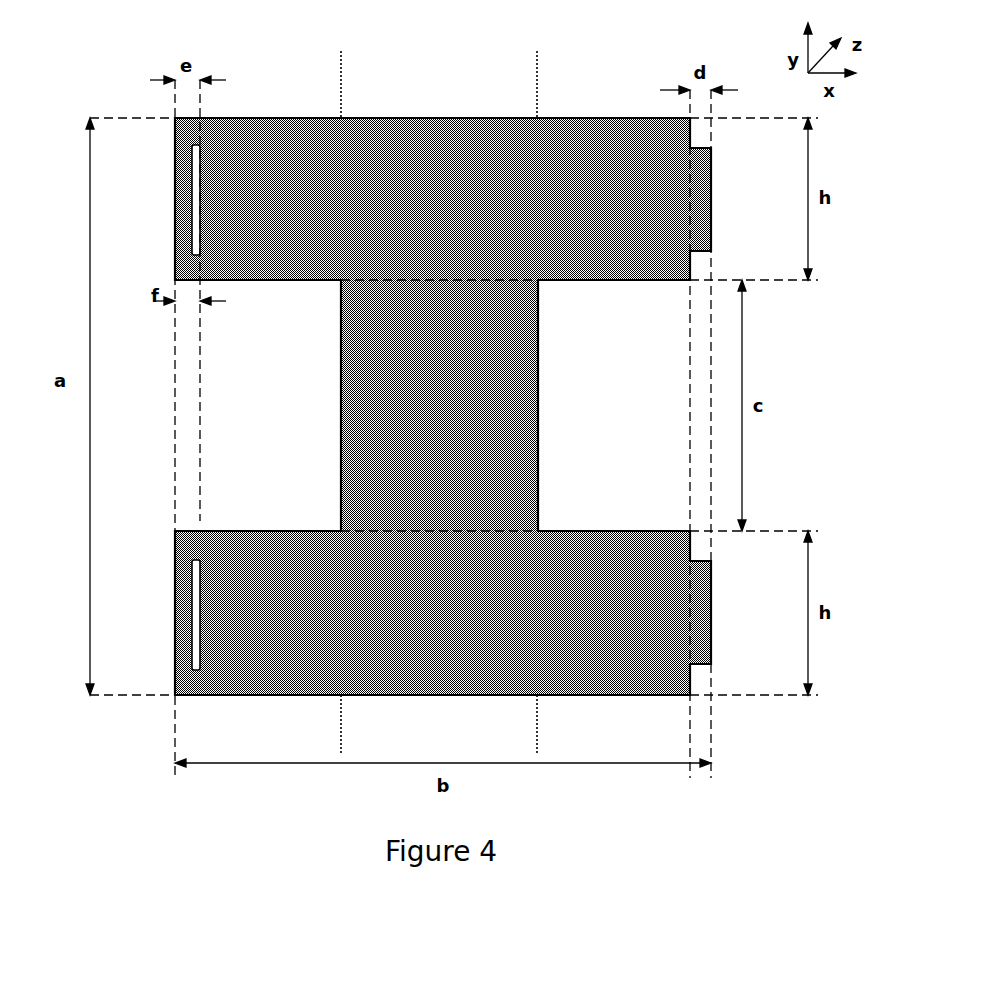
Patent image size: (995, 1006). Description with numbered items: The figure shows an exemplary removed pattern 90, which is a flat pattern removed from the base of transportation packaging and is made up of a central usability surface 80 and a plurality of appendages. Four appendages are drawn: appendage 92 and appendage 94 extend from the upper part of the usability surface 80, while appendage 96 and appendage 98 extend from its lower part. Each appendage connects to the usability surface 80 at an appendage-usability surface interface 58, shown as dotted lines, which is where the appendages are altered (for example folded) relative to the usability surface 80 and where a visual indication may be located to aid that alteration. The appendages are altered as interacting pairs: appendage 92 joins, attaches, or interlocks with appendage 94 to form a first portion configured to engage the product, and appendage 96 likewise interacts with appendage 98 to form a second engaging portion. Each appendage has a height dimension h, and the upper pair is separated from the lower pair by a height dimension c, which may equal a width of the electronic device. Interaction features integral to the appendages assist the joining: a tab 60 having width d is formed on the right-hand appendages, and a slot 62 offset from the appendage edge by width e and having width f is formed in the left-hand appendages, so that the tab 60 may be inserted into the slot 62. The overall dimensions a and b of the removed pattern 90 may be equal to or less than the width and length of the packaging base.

The removed pattern 90 is at (687, 43).
The usability surface 80 is at (428, 116).
The appendage 92 is at (568, 130).
The appendage 94 is at (247, 118).
The appendage 96 is at (618, 543).
The appendage 98 is at (218, 542).
The appendage-usability surface interface 58 is at (334, 68).
The tab 60 is at (694, 198).
The slot 62 is at (186, 215).